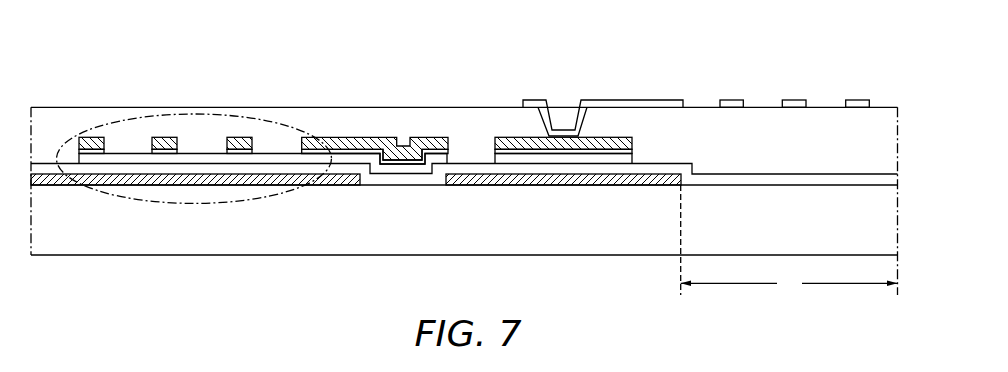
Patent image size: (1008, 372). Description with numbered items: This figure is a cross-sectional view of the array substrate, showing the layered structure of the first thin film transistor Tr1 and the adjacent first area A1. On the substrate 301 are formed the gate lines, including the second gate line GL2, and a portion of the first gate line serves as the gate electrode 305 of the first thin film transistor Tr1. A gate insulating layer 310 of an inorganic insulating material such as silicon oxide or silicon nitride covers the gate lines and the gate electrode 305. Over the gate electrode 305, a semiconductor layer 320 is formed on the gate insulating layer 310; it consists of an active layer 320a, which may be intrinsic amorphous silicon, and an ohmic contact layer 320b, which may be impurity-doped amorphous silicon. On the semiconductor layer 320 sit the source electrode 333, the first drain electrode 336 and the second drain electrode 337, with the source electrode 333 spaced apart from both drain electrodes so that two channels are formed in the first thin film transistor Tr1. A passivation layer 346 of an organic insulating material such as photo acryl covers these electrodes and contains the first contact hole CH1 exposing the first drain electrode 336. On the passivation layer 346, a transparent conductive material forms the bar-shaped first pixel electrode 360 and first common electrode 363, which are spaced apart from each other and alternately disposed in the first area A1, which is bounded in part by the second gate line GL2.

The substrate 301 is at (884, 247).
The gate electrode 305 is at (193, 182).
The gate insulating layer 310 is at (720, 182).
The semiconductor layer 320 is at (266, 231).
The active layer 320a is at (235, 157).
The ohmic contact layer 320b is at (246, 151).
The source electrode 333 is at (95, 143).
The first drain electrode 336 is at (166, 145).
The second drain electrode 337 is at (328, 147).
The passivation layer 346 is at (787, 164).
The first pixel electrode 360 is at (652, 103).
The first common electrode 363 is at (732, 105).
The first thin film transistor Tr1 is at (132, 200).
The first contact hole CH1 is at (567, 103).
The second gate line GL2 is at (556, 182).
The first area A1 is at (789, 240).